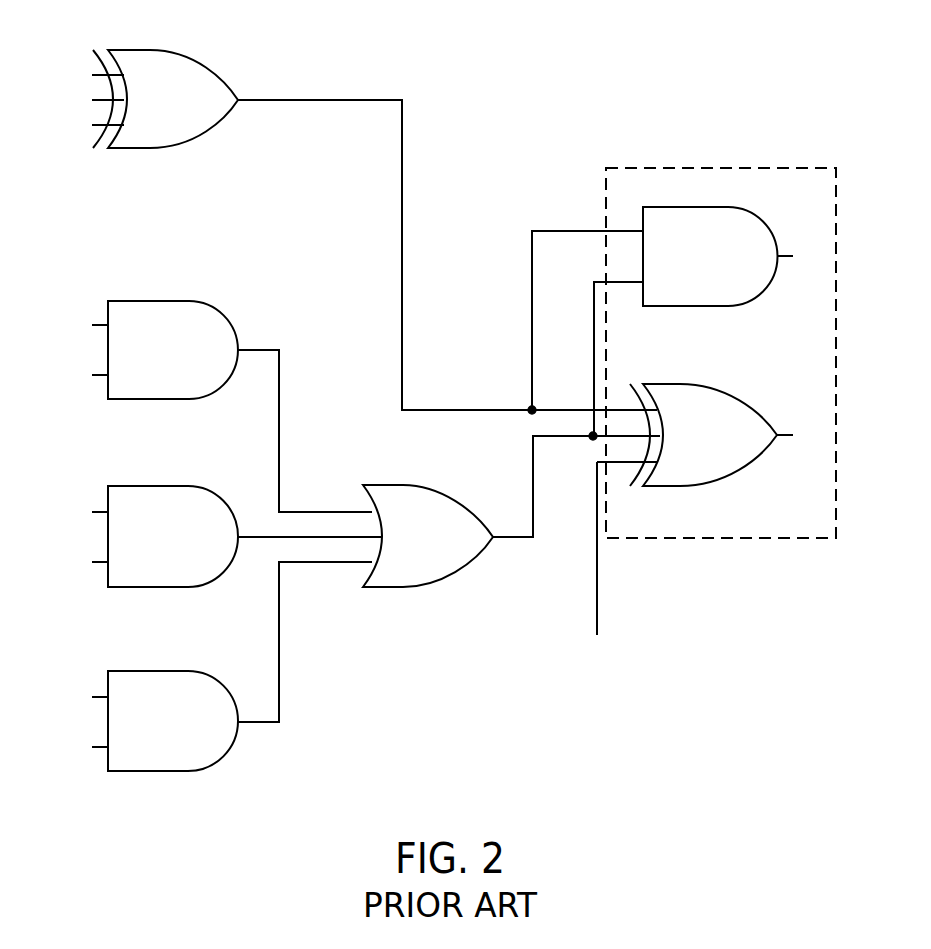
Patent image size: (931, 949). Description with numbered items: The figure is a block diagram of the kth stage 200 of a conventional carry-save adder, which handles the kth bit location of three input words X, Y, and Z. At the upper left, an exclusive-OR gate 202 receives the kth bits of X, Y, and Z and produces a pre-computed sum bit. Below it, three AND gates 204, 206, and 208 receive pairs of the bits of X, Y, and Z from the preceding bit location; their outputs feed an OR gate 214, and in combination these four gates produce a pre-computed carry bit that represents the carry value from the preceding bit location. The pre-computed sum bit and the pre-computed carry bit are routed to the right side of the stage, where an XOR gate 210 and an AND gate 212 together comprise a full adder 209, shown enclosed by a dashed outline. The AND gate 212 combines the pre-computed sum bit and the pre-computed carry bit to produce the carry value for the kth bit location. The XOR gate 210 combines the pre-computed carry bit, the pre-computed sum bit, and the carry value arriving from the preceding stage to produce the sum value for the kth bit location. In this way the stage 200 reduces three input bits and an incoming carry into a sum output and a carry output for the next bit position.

The kth stage 200 is at (428, 430).
The exclusive-OR (XOR) gate 202 is at (130, 148).
The AND gate 204 is at (165, 399).
The AND gate 206 is at (155, 587).
The AND gate 208 is at (152, 771).
The full adder 209 is at (721, 375).
The XOR gate 210 is at (703, 486).
The AND gate 212 is at (713, 306).
The OR gate 214 is at (388, 587).